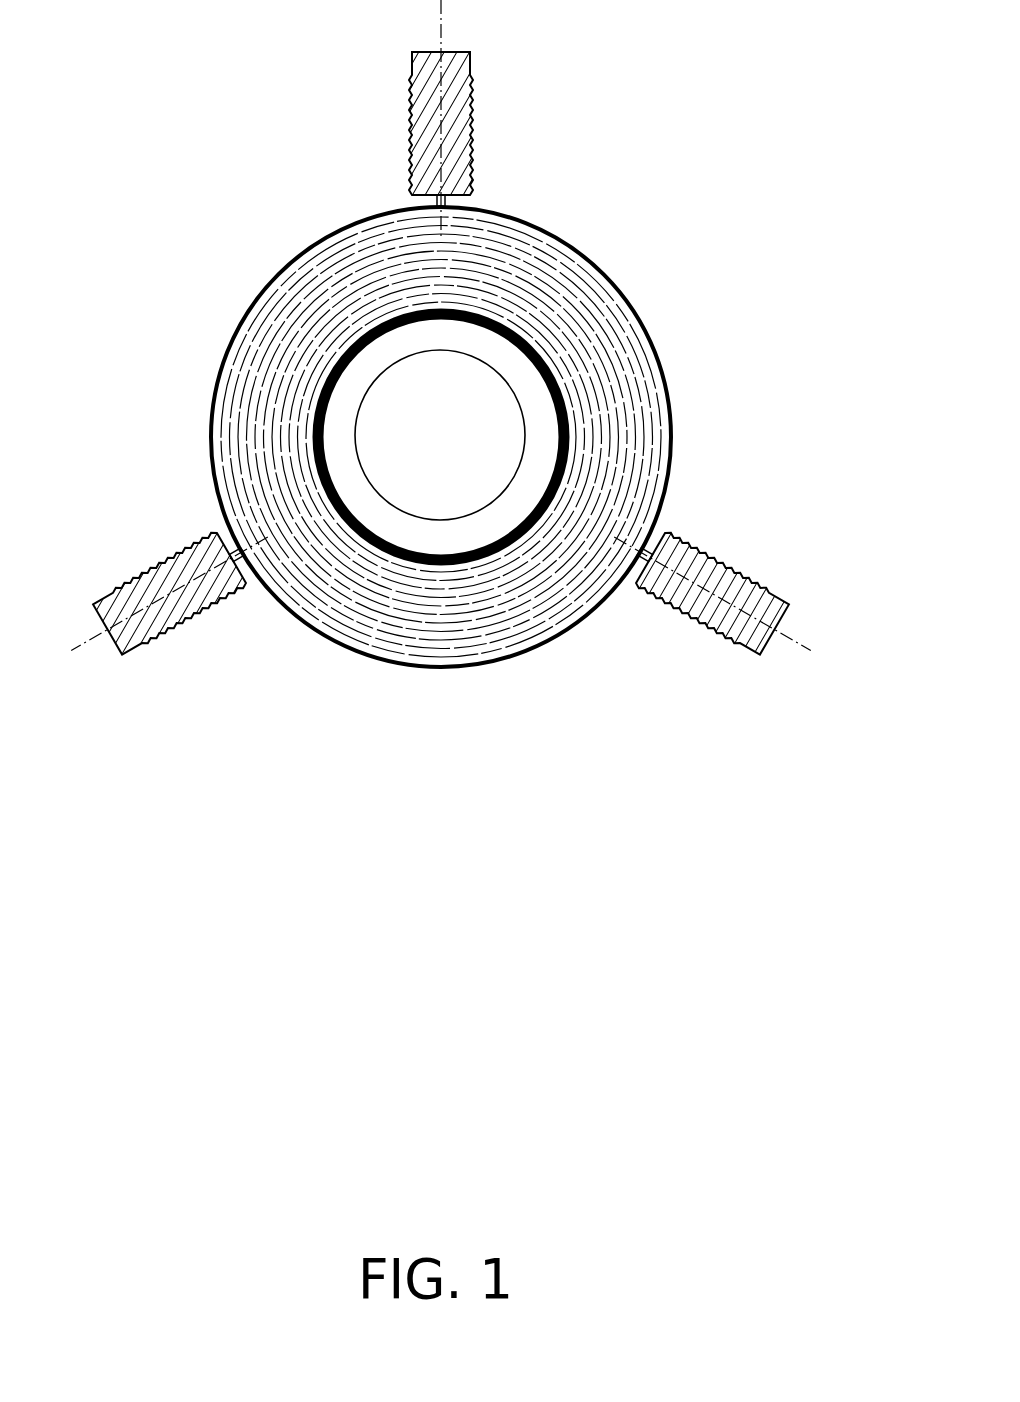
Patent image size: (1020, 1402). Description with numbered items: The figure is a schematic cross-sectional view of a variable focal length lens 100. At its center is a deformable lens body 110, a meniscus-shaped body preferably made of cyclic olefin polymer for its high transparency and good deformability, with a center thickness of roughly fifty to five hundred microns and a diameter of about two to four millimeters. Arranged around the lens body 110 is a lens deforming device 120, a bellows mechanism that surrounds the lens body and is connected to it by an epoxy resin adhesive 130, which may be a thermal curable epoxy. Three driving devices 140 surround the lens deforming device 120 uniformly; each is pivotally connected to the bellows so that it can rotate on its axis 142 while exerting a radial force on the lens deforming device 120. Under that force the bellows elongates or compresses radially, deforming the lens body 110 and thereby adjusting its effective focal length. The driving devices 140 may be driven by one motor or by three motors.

The variable focal length lens 100 is at (166, 55).
The deformable lens body 110 is at (522, 390).
The lens deforming device 120 is at (462, 610).
The epoxy resin adhesive 130 is at (320, 392).
The driving device 140 is at (454, 128).
The axis 142 is at (441, 3).